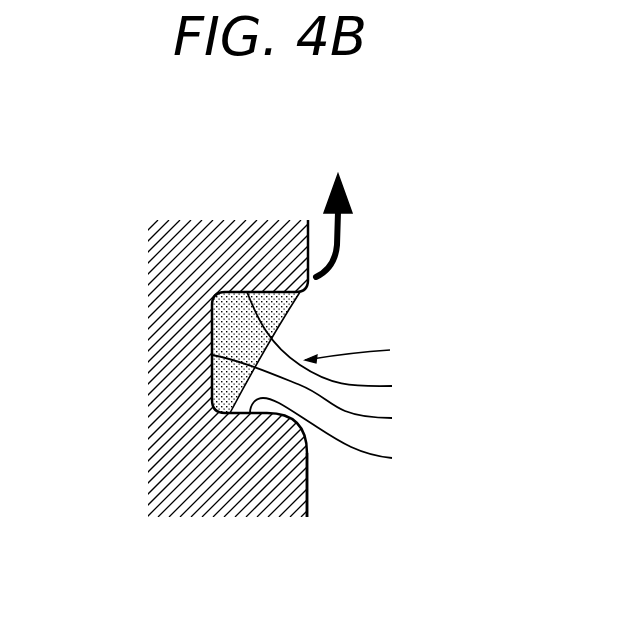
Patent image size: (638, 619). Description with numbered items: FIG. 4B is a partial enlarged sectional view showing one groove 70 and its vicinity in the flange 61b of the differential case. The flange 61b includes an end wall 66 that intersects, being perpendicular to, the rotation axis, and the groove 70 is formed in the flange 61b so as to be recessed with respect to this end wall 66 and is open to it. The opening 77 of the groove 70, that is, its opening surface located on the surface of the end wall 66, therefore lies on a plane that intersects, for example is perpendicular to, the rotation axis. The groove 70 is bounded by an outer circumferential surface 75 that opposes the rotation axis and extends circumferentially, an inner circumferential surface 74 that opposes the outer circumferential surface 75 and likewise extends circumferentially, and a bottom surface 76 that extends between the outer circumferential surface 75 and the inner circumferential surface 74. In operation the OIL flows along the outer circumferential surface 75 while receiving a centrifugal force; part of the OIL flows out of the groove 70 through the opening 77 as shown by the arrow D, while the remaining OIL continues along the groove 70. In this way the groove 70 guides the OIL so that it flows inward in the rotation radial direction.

The flange 61b is at (167, 347).
The oil OIL is at (291, 306).
The arrow D is at (339, 255).
The opening 77 is at (365, 353).
The groove 70 is at (343, 386).
The outer circumferential surface 75 is at (336, 347).
The bottom surface 76 is at (318, 396).
The inner circumferential surface 74 is at (337, 435).
The end wall 66 is at (307, 479).